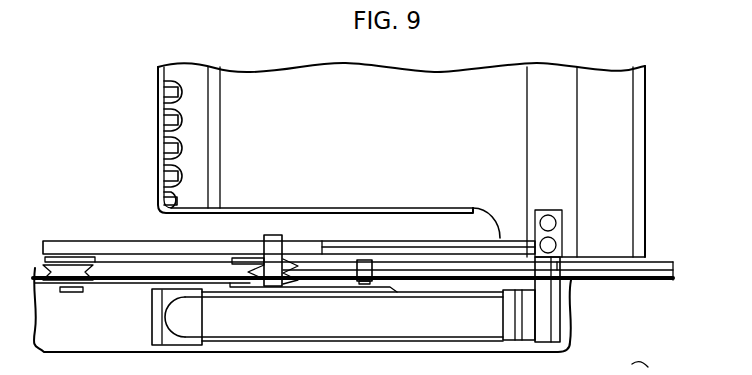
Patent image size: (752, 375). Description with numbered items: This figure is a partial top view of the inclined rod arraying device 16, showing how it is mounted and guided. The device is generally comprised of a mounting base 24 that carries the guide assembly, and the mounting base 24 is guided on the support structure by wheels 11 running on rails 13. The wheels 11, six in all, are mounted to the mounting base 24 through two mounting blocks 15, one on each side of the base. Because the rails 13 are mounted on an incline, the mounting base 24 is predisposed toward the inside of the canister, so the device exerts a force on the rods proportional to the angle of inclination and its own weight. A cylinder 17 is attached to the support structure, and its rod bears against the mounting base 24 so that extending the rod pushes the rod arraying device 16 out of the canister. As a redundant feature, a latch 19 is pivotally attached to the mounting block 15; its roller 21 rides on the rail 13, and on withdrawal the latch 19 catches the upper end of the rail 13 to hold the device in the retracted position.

The wheels 11 is at (53, 290).
The rails 13 is at (127, 286).
The mounting block 15 is at (87, 241).
The rod arraying device 16 is at (656, 158).
The cylinder 17 is at (343, 323).
The latch 19 is at (287, 238).
The roller 21 is at (364, 258).
The mounting base 24 is at (395, 131).